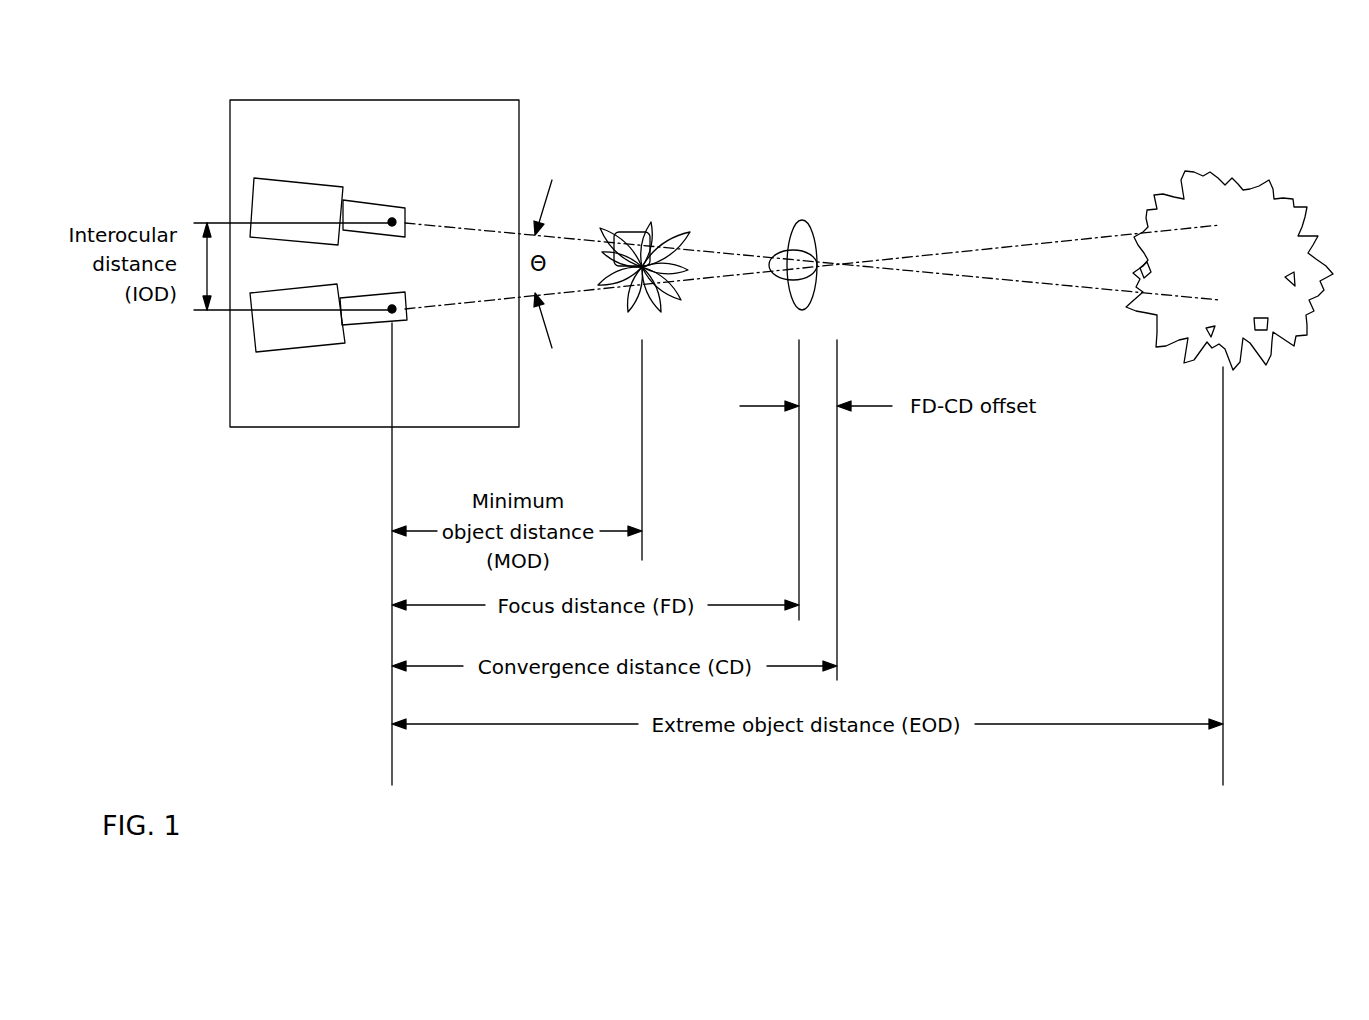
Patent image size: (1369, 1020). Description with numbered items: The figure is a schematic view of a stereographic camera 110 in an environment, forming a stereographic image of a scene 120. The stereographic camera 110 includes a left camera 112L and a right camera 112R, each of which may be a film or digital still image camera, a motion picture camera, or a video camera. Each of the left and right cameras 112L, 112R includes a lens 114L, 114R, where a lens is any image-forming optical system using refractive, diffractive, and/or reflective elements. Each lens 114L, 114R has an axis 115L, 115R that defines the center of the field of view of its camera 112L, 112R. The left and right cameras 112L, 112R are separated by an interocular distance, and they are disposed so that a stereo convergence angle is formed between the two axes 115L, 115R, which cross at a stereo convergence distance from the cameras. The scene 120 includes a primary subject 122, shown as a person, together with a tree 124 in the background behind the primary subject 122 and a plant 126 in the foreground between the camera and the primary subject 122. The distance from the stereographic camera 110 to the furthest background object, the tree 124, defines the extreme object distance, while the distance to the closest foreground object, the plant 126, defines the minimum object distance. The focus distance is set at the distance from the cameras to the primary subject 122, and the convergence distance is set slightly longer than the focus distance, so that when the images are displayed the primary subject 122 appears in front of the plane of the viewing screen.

The scene 120 is at (596, 53).
The stereographic camera 110 is at (374, 263).
The left camera 112L is at (287, 190).
The right camera 112R is at (320, 347).
The lens 114L is at (372, 205).
The lens 114R is at (393, 325).
The axis 115L is at (975, 277).
The axis 115R is at (967, 252).
The primary subject 122 is at (808, 223).
The tree 124 is at (1225, 178).
The plant 126 is at (657, 240).